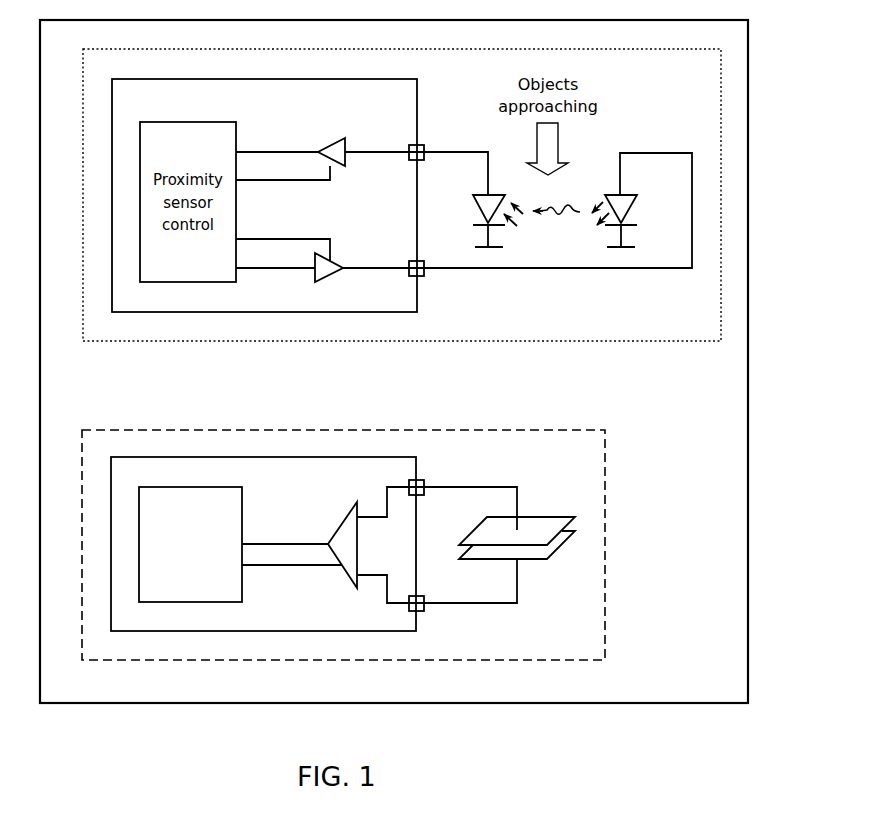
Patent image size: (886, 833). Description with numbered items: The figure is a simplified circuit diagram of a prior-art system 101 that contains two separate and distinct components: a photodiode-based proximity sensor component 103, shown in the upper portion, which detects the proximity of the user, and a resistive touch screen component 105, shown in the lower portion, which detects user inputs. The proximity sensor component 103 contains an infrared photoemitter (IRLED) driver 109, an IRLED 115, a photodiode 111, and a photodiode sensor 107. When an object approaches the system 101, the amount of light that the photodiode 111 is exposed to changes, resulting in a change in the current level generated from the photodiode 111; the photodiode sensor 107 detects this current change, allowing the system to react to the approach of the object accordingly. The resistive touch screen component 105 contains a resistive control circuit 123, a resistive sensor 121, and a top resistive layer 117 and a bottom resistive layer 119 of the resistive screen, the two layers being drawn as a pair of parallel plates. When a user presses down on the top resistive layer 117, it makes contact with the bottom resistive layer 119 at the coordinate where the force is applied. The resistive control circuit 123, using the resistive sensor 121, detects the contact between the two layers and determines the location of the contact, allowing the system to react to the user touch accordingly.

The system 101 is at (752, 372).
The proximity sensor component 103 is at (359, 344).
The resistive touch screen component 105 is at (256, 428).
The photodiode sensor 107 is at (328, 138).
The infrared photoemitter (IRLED) driver 109 is at (329, 285).
The photodiode 111 is at (476, 205).
The IRLED 115 is at (638, 210).
The top resistive layer 117 is at (539, 516).
The bottom resistive layer 119 is at (559, 551).
The resistive sensor 121 is at (339, 523).
The resistive control circuit 123 is at (183, 486).